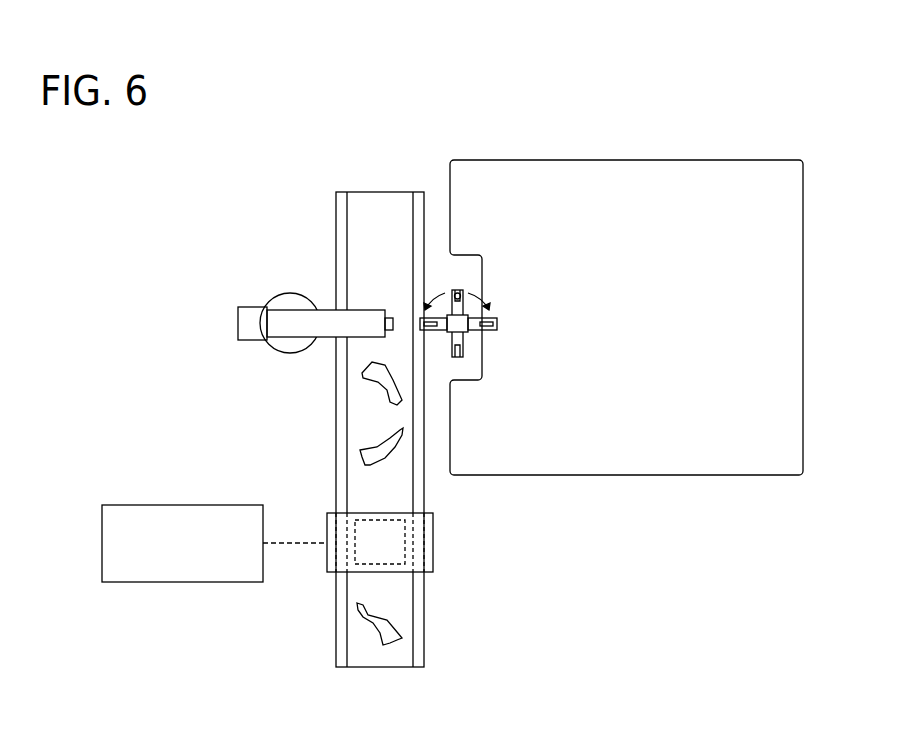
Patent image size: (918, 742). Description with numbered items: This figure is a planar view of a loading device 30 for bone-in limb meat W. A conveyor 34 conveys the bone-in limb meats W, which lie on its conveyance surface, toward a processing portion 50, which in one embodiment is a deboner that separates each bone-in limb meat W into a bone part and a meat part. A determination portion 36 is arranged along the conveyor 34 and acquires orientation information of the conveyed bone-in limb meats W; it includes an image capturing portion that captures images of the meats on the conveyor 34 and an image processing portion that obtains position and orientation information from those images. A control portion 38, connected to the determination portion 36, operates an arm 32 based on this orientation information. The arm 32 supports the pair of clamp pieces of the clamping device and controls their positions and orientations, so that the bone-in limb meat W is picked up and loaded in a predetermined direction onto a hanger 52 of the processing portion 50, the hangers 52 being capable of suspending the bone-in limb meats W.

The loading device 30 is at (239, 195).
The arm 32 is at (327, 317).
The conveyor 34 is at (424, 623).
The determination portion 36 is at (433, 528).
The control portion 38 is at (152, 505).
The processing portion 50 is at (474, 160).
The hanger 52 is at (458, 338).
The bone-in limb meat W is at (458, 291).